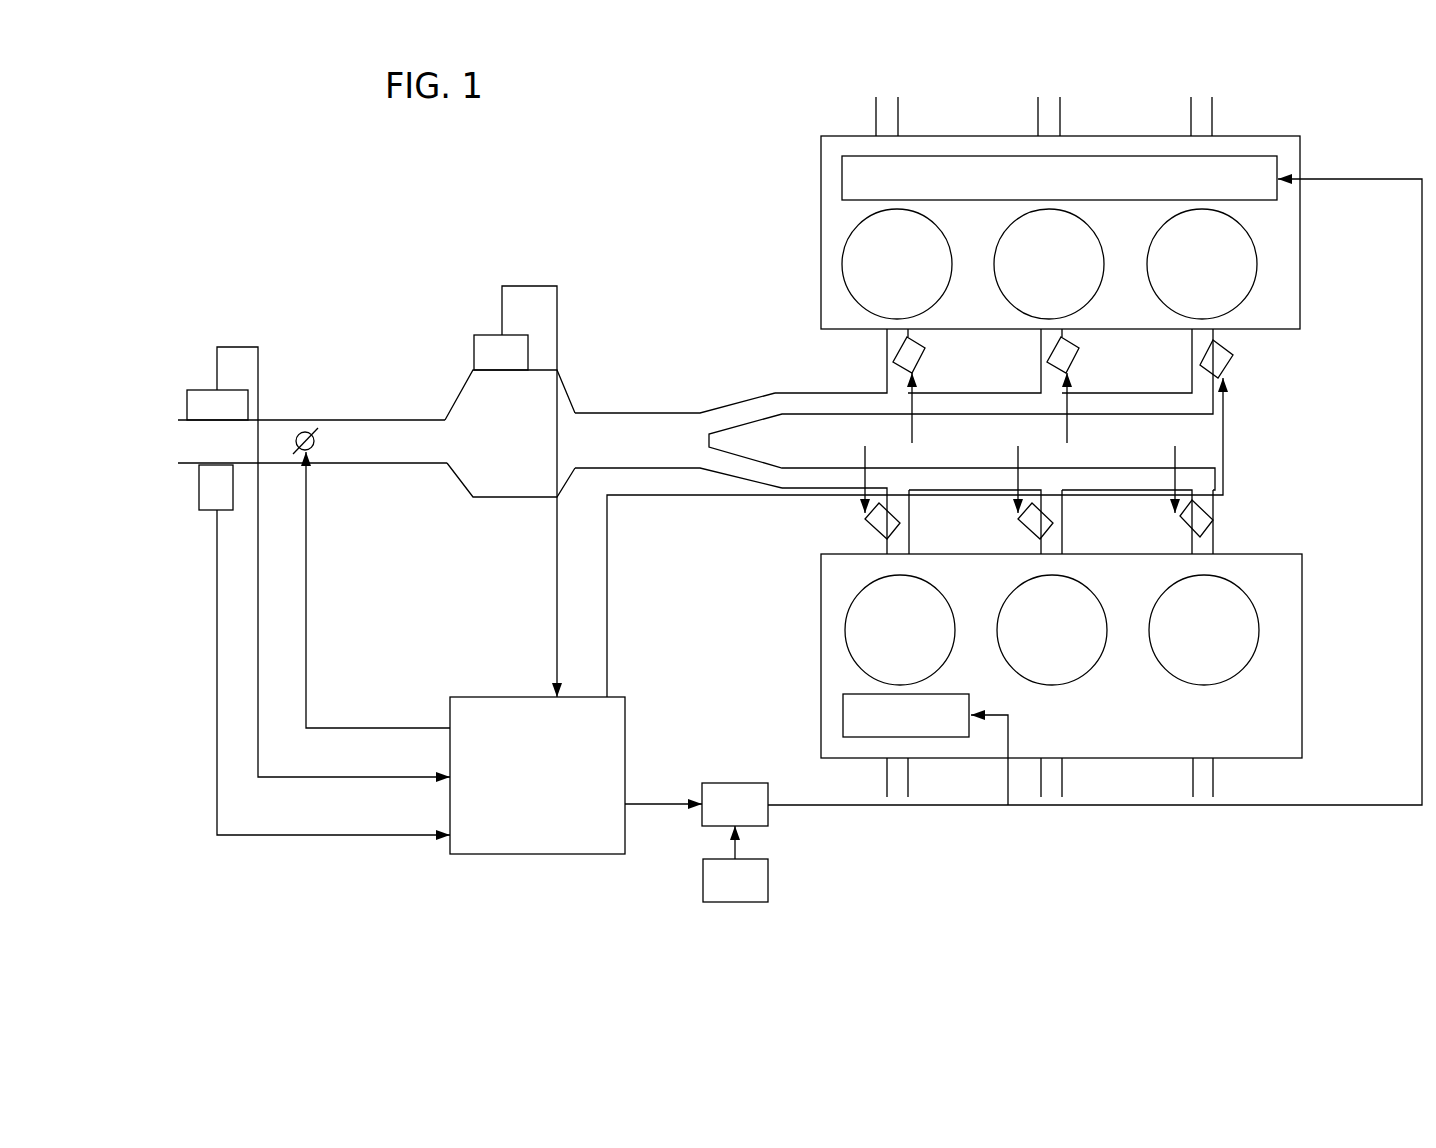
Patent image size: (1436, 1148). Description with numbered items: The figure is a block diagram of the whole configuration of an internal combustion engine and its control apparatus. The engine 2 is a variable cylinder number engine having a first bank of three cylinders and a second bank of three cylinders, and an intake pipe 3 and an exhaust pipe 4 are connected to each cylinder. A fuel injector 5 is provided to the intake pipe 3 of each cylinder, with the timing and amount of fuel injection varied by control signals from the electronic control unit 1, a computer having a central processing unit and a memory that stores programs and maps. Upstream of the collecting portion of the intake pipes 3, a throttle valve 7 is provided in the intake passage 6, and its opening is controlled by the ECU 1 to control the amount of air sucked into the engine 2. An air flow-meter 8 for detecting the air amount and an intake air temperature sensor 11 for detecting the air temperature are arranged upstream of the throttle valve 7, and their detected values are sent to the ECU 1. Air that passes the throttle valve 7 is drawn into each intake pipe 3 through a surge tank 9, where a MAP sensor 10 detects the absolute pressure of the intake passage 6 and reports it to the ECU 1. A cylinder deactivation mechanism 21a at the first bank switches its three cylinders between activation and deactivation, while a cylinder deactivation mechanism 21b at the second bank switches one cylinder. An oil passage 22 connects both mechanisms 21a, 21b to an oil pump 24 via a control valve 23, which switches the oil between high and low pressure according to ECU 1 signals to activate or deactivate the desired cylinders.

The electronic control unit 1 is at (538, 855).
The engine 2 is at (1283, 425).
The intake pipe 3 is at (837, 453).
The exhaust pipe 4 is at (1240, 782).
The fuel injector 5 is at (1253, 355).
The intake passage 6 is at (632, 413).
The throttle valve 7 is at (308, 427).
The air flow-meter 8 is at (193, 392).
The surge tank 9 is at (580, 393).
The MAP sensor 10 is at (475, 335).
The intake air temperature sensor 11 is at (199, 488).
The cylinder deactivation mechanism 21a is at (1059, 178).
The cylinder deactivation mechanism 21b is at (906, 715).
The oil passage 22 is at (1320, 805).
The control valve 23 is at (718, 782).
The oil pump 24 is at (770, 880).